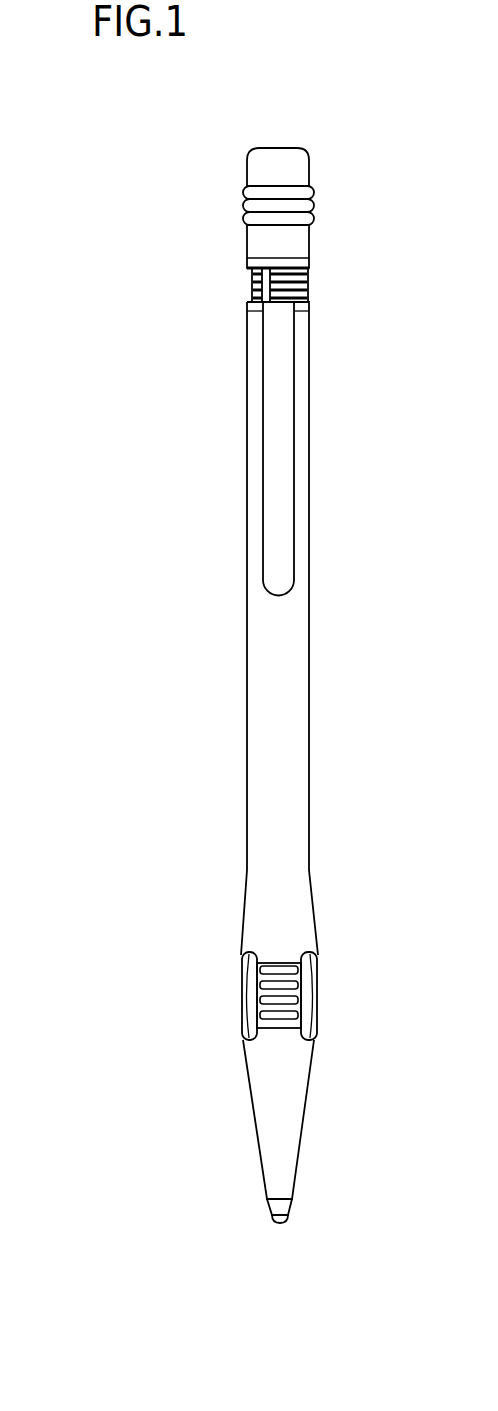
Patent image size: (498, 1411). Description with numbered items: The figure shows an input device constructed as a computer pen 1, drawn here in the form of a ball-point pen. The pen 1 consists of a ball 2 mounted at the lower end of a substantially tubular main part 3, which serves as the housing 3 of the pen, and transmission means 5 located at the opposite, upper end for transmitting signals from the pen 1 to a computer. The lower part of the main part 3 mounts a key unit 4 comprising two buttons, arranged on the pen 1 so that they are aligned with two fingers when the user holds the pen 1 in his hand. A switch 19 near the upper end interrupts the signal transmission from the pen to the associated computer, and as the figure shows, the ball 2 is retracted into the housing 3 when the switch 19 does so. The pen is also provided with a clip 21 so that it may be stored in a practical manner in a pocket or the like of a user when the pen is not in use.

The computer pen 1 is at (184, 587).
The ball 2 is at (273, 1222).
The main part 3 is at (268, 781).
The key unit 4 is at (214, 973).
The transmission means 5 is at (214, 152).
The switch 19 is at (298, 215).
The clip 21 is at (282, 572).